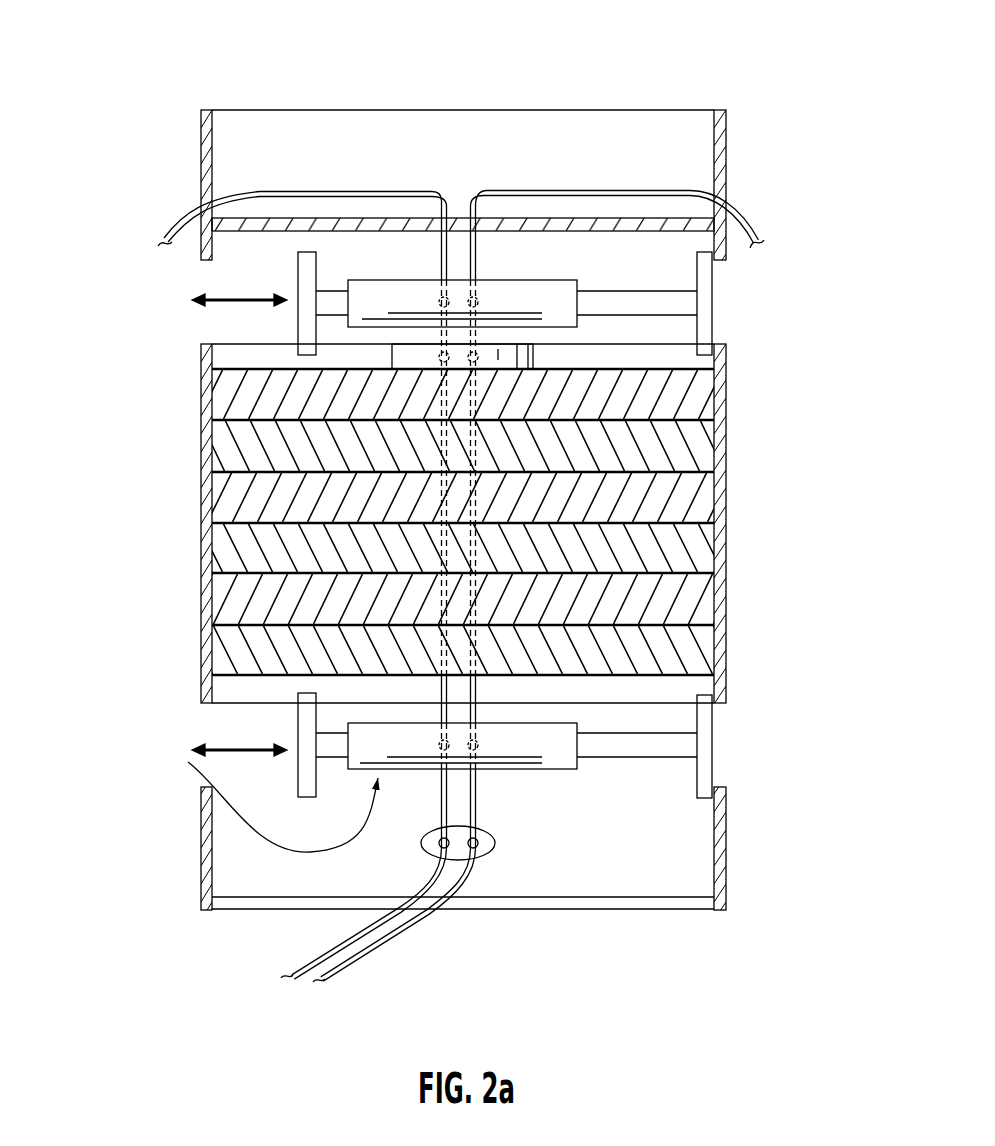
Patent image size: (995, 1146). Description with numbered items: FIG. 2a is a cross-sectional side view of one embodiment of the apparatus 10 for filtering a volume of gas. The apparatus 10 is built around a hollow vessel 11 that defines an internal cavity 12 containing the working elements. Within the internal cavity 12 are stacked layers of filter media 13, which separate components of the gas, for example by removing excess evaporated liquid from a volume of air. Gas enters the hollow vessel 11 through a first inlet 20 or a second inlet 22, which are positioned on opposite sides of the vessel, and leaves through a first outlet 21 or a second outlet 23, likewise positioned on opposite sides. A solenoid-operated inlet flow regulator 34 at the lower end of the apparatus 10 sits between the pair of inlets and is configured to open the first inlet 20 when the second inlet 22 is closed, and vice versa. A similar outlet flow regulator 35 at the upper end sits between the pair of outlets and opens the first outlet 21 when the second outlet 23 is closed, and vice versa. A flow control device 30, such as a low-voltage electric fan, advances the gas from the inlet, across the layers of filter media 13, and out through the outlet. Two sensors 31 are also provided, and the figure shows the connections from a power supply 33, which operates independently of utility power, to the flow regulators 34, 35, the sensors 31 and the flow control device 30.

The apparatus 10 is at (411, 130).
The hollow vessel 11 is at (200, 483).
The internal cavity 12 is at (661, 851).
The filter media 13 is at (685, 598).
The first inlet 20 is at (440, 842).
The first outlet 21 is at (440, 216).
The second inlet 22 is at (717, 758).
The second outlet 23 is at (722, 320).
The flow control device 30 is at (535, 355).
The sensors 31 is at (158, 253).
The power supply 33 is at (305, 990).
The inlet flow regulator 34 is at (328, 755).
The outlet flow regulator 35 is at (617, 290).